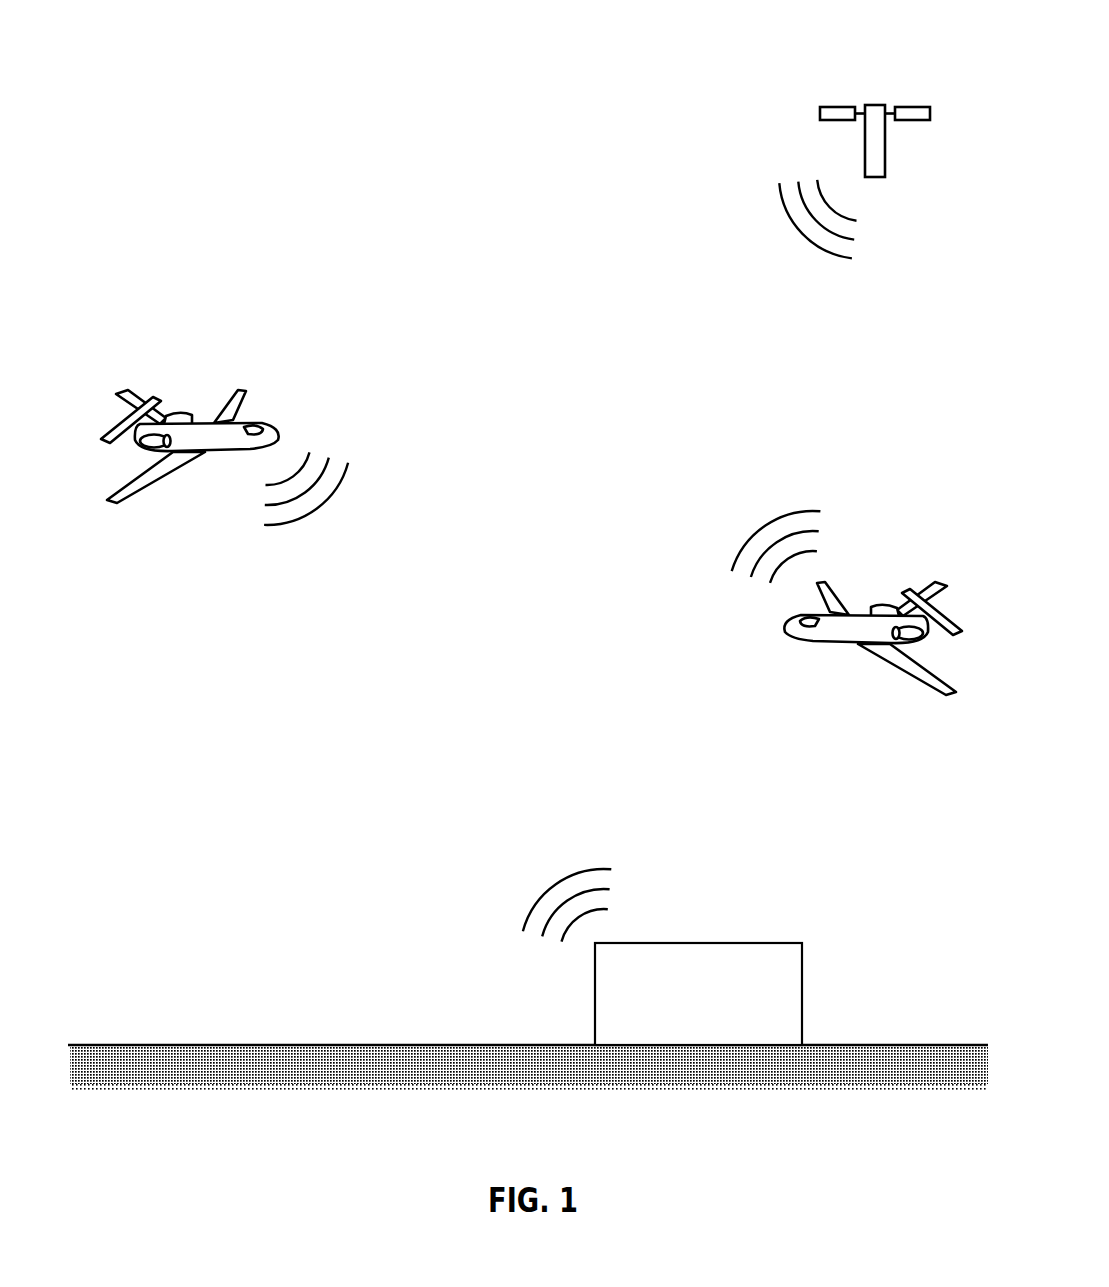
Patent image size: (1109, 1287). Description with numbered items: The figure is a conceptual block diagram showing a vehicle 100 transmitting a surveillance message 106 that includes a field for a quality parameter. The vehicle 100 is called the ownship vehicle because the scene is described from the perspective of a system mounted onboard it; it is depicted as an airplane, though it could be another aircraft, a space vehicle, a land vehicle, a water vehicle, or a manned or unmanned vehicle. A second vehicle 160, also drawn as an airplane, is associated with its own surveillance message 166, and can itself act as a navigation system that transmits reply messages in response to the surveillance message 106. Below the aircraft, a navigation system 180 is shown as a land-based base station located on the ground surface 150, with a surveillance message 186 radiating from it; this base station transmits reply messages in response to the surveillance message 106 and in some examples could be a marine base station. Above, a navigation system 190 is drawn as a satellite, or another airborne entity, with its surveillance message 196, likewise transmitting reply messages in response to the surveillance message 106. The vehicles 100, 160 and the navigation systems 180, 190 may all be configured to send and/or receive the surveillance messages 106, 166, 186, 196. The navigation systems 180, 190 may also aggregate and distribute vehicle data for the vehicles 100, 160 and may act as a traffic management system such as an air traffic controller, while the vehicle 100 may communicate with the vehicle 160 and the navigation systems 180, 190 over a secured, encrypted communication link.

The ownship vehicle 100 is at (255, 325).
The surveillance message 106 is at (338, 545).
The ground surface 150 is at (352, 1045).
The vehicle 160 is at (808, 705).
The surveillance message 166 is at (737, 494).
The navigation system 180 is at (717, 1032).
The surveillance message 186 is at (522, 834).
The navigation system 190 is at (754, 100).
The surveillance message 196 is at (780, 266).